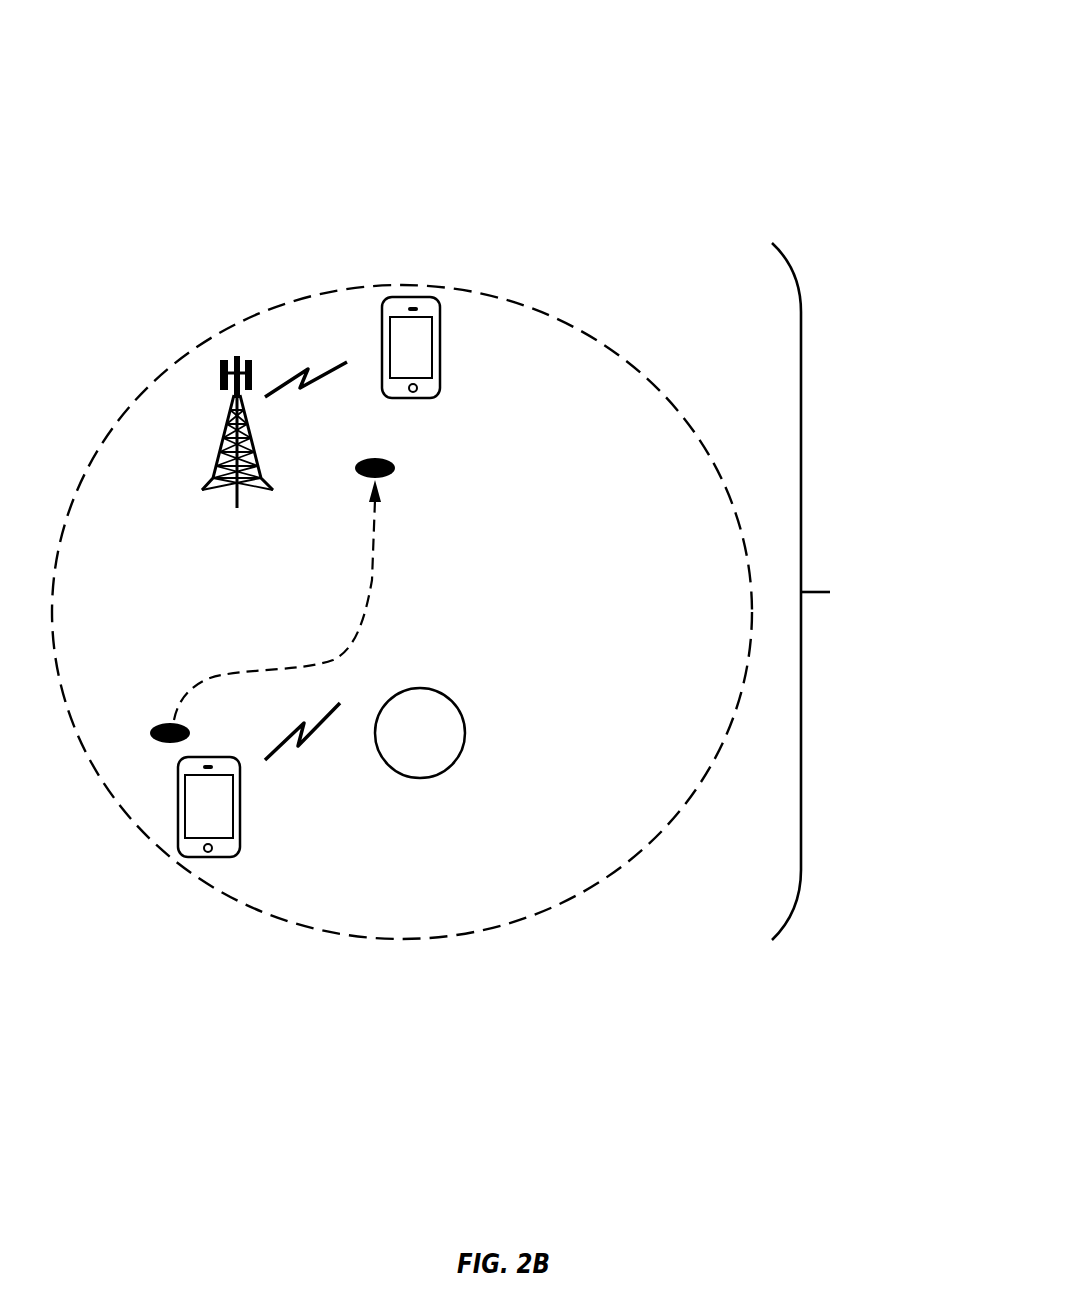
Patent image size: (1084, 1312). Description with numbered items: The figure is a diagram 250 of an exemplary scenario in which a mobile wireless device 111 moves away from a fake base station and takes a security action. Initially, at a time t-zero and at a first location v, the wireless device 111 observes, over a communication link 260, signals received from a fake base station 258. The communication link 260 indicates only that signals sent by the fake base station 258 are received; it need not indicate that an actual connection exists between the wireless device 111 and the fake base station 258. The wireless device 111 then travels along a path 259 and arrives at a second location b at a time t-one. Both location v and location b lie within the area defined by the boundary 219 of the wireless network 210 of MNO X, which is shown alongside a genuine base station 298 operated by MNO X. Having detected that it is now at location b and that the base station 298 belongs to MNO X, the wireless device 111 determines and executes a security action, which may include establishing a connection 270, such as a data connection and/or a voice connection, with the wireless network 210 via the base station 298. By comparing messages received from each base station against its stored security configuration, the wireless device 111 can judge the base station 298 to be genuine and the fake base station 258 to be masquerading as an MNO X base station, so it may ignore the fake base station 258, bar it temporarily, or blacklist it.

The diagram 250 is at (108, 37).
The boundary 219 is at (618, 353).
The wireless network 210 is at (864, 591).
The base station 298 is at (306, 457).
The connection 270 is at (345, 362).
The wireless device 111 is at (440, 342).
The path 259 is at (374, 560).
The fake base station 258 is at (428, 645).
The communication link 260 is at (292, 730).